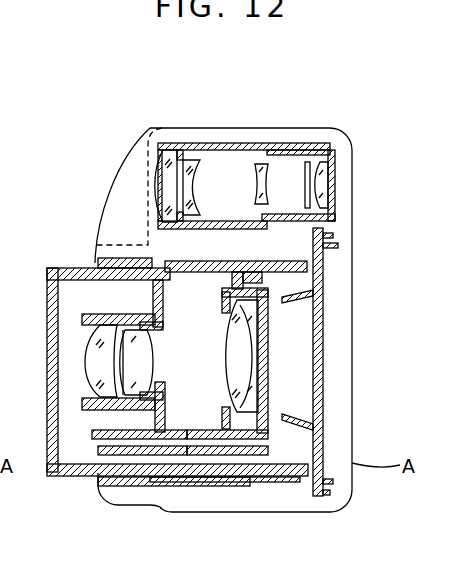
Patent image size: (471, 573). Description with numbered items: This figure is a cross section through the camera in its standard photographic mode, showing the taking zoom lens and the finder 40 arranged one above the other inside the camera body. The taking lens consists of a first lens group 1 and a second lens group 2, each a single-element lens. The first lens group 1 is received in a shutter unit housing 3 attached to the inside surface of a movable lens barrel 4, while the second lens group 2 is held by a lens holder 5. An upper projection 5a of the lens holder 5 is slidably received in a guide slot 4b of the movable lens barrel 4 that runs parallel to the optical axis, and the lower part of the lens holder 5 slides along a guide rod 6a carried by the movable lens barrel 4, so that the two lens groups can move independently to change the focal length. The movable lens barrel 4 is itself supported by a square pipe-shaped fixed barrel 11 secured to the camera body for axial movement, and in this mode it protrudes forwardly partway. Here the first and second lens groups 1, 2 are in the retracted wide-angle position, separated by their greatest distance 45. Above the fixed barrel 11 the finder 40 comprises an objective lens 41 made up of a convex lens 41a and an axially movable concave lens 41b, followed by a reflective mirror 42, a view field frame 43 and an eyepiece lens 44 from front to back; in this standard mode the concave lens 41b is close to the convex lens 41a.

The first lens group 1 is at (83, 362).
The second lens group 2 is at (274, 360).
The shutter unit housing 3 is at (108, 316).
The movable lens barrel 4 is at (77, 478).
The guide slot 4b is at (200, 274).
The lens holder 5 is at (242, 442).
The upper projection 5a is at (237, 272).
The guide rod 6a is at (190, 487).
The fixed barrel 11 is at (283, 478).
The finder 40 is at (241, 143).
The objective lens 41 is at (152, 153).
The convex lens 41a is at (167, 190).
The concave lens 41b is at (188, 165).
The reflective mirror 42 is at (262, 163).
The view field frame 43 is at (307, 162).
The eyepiece lens 44 is at (322, 188).
The greatest distance 45 is at (212, 380).